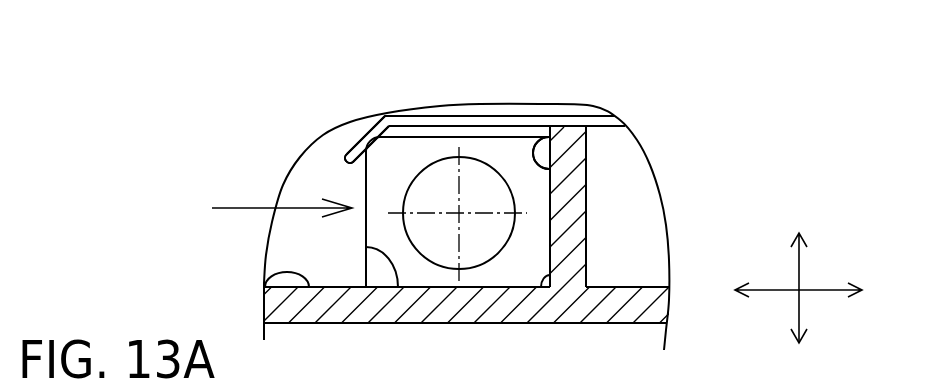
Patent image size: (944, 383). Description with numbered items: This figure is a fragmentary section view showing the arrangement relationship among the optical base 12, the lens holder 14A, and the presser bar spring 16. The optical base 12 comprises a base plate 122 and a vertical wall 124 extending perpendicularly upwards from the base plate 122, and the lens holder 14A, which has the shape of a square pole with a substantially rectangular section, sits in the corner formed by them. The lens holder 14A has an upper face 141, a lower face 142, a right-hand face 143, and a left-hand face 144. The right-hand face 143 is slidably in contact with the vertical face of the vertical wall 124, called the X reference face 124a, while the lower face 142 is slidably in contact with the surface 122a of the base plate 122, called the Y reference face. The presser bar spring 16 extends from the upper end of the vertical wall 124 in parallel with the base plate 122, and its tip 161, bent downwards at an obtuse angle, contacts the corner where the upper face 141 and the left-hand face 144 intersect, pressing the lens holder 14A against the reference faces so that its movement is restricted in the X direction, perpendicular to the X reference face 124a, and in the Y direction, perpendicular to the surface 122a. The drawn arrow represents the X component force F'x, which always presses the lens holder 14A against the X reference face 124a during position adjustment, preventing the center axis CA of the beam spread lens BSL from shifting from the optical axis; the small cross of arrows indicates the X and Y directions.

The optical base 12 is at (539, 237).
The base plate 122 is at (490, 305).
The surface of base plate 122a is at (273, 273).
The vertical wall 124 is at (573, 242).
The X reference face 124a is at (550, 215).
The lens holder 14A is at (399, 164).
The upper face 141 is at (434, 139).
The lower face 142 is at (358, 244).
The right-hand face 143 is at (533, 150).
The left-hand face 144 is at (358, 182).
The presser bar spring 16 is at (475, 102).
The tip of presser bar spring 161 is at (369, 138).
The beam spread lens BSL is at (487, 191).
The center axis CA is at (459, 214).
The X component force F'x is at (274, 177).
The X direction X is at (833, 292).
The Y direction Y is at (800, 262).